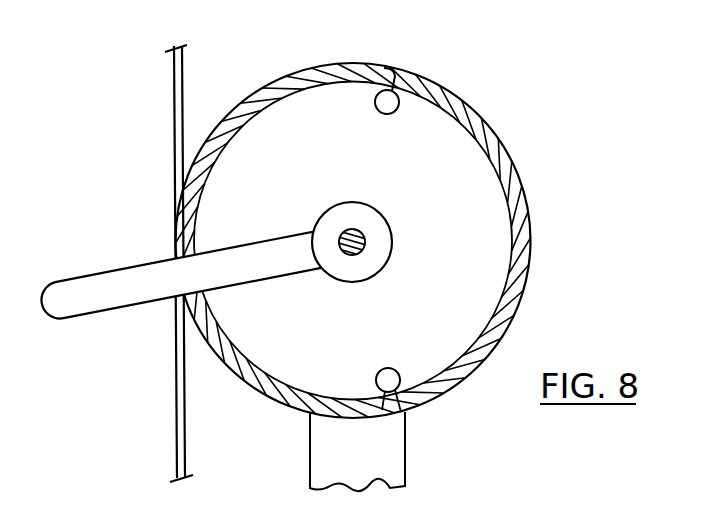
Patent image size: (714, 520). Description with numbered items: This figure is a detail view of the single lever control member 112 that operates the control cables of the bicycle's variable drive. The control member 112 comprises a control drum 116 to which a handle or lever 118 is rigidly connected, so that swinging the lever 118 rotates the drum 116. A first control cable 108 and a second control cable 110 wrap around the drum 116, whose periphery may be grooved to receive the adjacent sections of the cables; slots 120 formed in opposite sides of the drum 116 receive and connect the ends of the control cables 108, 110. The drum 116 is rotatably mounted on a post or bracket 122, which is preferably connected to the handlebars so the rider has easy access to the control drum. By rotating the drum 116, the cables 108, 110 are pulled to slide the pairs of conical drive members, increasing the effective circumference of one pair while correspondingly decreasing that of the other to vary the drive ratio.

The first control cable 108 is at (190, 444).
The second control cable 110 is at (185, 97).
The single lever control member 112 is at (292, 50).
The control drum 116 is at (307, 196).
The handle or lever 118 is at (90, 313).
The slots 120 is at (381, 111).
The post or bracket 122 is at (402, 449).